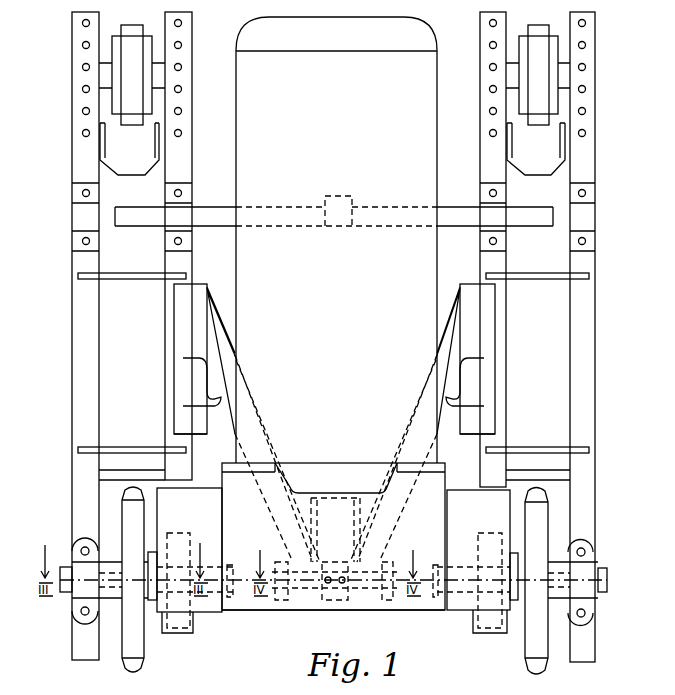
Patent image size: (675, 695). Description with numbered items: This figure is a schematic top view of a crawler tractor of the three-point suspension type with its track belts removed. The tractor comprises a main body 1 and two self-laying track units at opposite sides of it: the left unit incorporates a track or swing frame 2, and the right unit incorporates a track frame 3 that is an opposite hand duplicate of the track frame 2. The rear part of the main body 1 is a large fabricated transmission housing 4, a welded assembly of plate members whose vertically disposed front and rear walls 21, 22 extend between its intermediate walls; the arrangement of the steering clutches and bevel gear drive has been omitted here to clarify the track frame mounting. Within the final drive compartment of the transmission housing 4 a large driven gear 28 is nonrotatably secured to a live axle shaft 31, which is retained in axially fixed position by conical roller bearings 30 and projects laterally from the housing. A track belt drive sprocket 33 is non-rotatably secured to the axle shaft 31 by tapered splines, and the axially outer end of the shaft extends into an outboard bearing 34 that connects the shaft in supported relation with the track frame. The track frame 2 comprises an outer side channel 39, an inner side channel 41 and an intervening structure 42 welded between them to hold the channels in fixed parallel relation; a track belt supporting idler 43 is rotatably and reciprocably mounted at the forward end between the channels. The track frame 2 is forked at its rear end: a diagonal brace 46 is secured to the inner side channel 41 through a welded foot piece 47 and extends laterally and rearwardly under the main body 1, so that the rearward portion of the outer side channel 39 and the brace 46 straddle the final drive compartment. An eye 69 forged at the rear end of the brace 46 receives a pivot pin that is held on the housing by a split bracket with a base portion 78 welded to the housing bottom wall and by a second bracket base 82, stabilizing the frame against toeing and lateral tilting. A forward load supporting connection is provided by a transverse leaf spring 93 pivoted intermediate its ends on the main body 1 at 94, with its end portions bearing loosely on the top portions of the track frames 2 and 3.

The main body 1 is at (348, 123).
The track frame 2 is at (77, 307).
The track frame 3 is at (596, 312).
The transmission housing 4 is at (431, 515).
The front wall 21 is at (307, 493).
The rear wall 22 is at (268, 610).
The large driven gear 28 is at (182, 533).
The conical roller bearing 30 is at (233, 567).
The live axle shaft 31 is at (85, 570).
The track belt drive sprocket 33 is at (127, 668).
The outboard bearing 34 is at (80, 598).
The outer side channel 39 is at (77, 400).
The inner side channel 41 is at (192, 266).
The intervening structure 42 is at (147, 279).
The track belt supporting idler 43 is at (135, 125).
The diagonal brace 46 is at (225, 346).
The foot piece 47 is at (207, 434).
The eye 69 is at (308, 600).
The base portion 78 is at (335, 562).
The bracket base 82 is at (387, 563).
The transverse leaf spring 93 is at (222, 210).
The pivot 94 is at (348, 232).